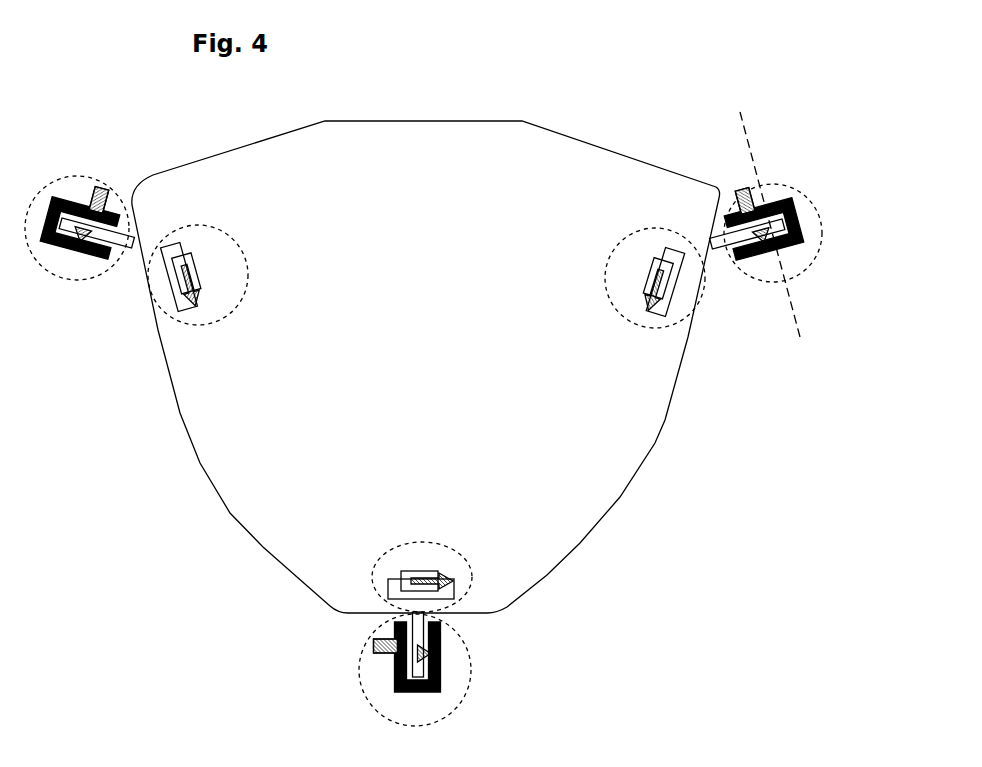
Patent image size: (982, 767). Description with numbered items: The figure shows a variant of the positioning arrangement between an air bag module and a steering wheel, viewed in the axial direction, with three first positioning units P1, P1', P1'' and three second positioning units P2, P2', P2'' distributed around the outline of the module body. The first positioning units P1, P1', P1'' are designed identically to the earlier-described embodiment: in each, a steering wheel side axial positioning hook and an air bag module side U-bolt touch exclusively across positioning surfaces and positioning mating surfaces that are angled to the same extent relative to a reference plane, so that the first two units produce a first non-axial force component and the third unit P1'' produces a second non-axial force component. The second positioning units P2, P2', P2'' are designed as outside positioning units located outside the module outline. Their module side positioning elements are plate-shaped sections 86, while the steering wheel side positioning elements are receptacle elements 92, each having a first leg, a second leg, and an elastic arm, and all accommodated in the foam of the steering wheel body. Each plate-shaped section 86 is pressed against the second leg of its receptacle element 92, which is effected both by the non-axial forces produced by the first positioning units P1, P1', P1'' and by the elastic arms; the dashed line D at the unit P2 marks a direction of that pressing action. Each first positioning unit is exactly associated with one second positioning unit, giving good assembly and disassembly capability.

The second positioning unit P2' is at (85, 173).
The first positioning unit P1' is at (180, 354).
The first positioning unit P1 is at (705, 344).
The first positioning unit P1'' is at (527, 577).
The second positioning unit P2'' is at (489, 670).
The second positioning unit P2 is at (807, 190).
The receptacle element 92 is at (800, 220).
The plate-shaped section 86 is at (730, 243).
The axis direction D is at (745, 123).